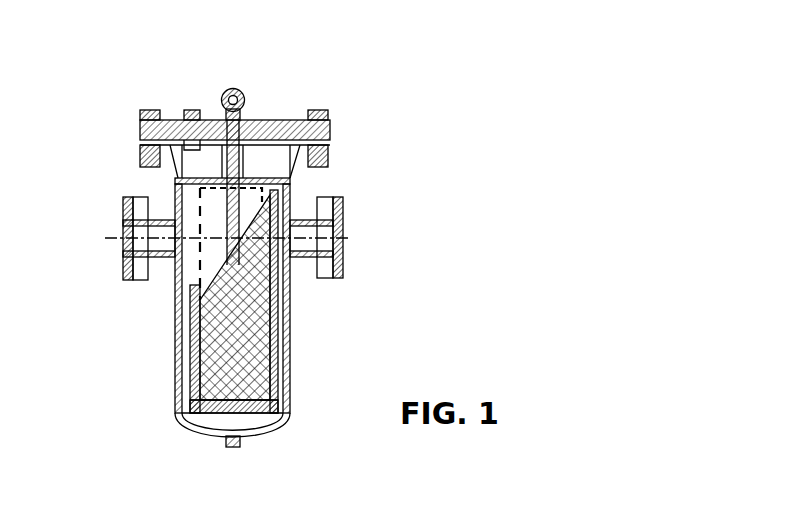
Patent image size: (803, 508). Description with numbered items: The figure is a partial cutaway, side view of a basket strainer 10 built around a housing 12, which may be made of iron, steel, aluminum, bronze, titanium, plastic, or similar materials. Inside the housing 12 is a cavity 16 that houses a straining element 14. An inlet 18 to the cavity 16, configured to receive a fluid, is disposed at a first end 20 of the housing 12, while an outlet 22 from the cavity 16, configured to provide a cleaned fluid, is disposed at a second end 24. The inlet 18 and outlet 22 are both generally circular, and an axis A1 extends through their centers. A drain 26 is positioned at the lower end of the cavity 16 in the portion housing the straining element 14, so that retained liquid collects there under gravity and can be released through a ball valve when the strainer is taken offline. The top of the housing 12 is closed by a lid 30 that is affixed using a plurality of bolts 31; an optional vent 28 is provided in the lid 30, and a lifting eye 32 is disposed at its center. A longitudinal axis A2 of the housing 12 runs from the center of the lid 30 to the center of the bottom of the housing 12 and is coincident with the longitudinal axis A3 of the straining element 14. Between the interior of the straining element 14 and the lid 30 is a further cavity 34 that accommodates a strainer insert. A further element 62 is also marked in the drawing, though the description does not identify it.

The basket strainer 10 is at (244, 268).
The housing 12 is at (293, 327).
The straining element 14 is at (285, 413).
The cavity 16 is at (180, 350).
The inlet 18 is at (120, 256).
The first end 20 is at (177, 253).
The outlet 22 is at (347, 273).
The second end 24 is at (288, 253).
The drain 26 is at (223, 443).
The vent 28 is at (190, 113).
The lid 30 is at (270, 130).
The bolts 31 is at (138, 117).
The lifting eye 32 is at (243, 93).
The cavity 34 is at (197, 199).
The axis A1 is at (342, 232).
The longitudinal axis of the housing A2 is at (233, 413).
The longitudinal axis of the straining element A3 is at (233, 413).
The element 62 is at (329, 504).